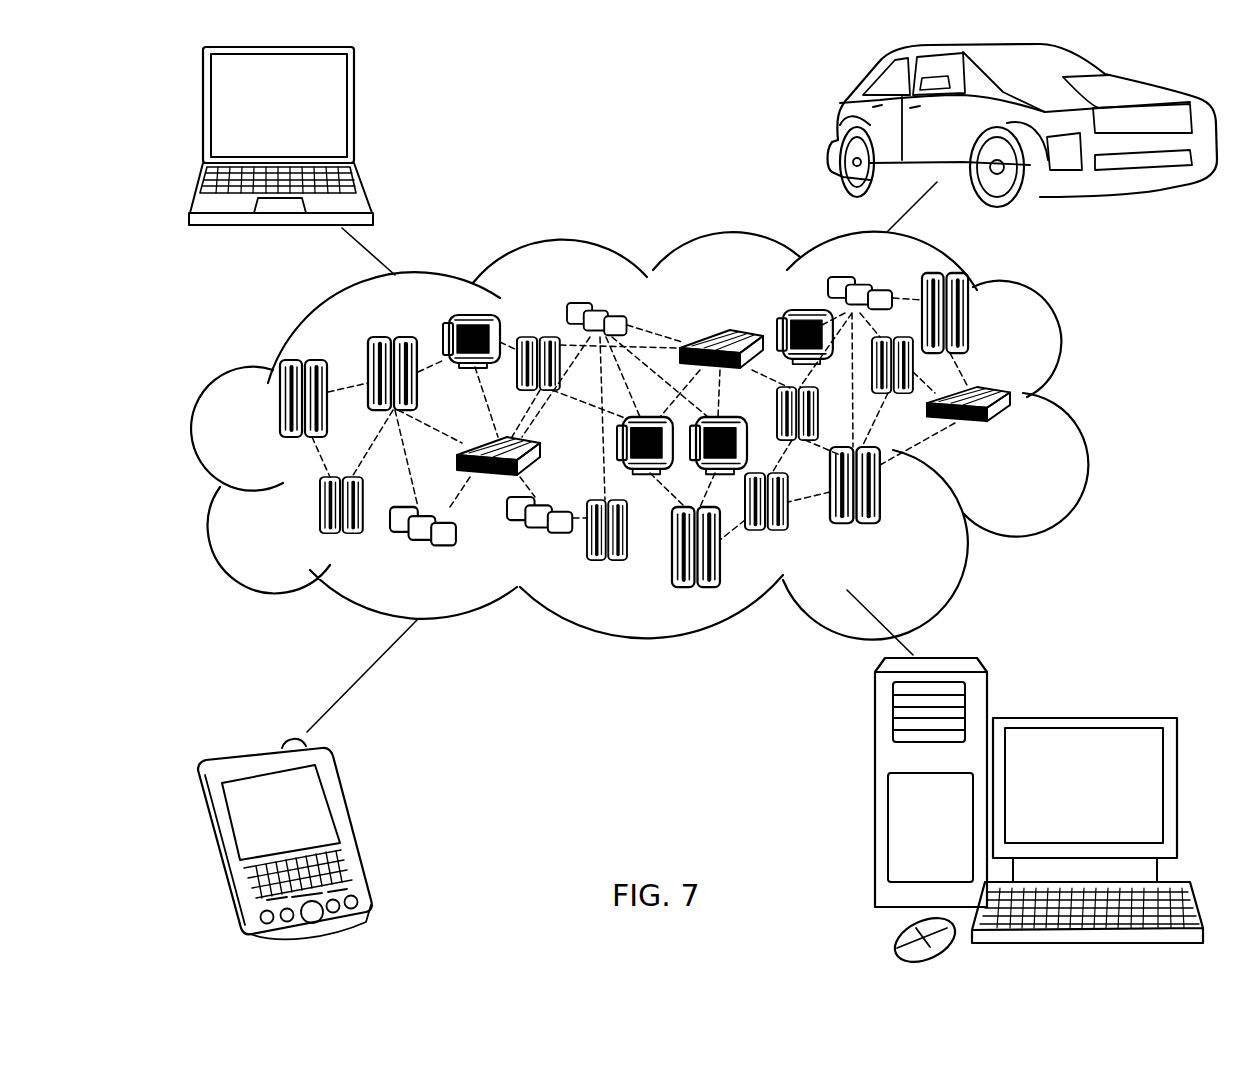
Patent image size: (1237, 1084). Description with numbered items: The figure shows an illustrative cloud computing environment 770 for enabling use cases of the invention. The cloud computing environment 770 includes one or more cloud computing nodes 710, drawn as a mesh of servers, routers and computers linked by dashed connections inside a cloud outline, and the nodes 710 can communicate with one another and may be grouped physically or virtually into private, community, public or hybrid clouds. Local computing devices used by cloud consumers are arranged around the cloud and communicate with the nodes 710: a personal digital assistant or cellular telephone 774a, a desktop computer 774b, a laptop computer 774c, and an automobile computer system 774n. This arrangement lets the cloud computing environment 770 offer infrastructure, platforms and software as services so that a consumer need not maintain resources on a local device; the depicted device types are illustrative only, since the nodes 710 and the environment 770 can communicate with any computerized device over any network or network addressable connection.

The cloud computing environment 770 is at (1078, 405).
The cloud computing nodes 710 is at (1024, 440).
The personal digital assistant or cellular telephone 774a is at (350, 828).
The desktop computer 774b is at (1080, 718).
The laptop computer 774c is at (356, 112).
The automobile computer system 774n is at (833, 128).